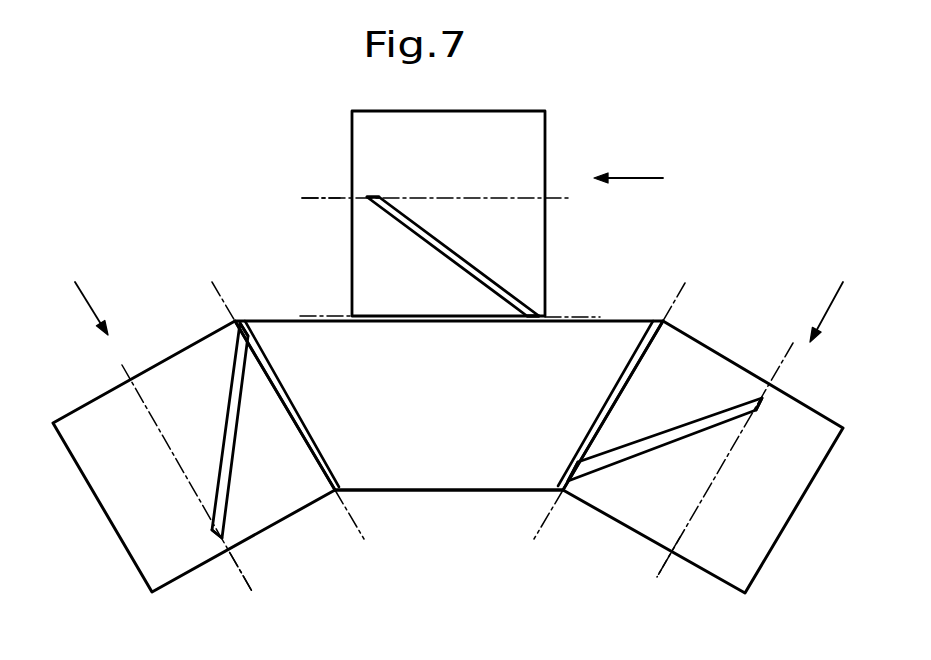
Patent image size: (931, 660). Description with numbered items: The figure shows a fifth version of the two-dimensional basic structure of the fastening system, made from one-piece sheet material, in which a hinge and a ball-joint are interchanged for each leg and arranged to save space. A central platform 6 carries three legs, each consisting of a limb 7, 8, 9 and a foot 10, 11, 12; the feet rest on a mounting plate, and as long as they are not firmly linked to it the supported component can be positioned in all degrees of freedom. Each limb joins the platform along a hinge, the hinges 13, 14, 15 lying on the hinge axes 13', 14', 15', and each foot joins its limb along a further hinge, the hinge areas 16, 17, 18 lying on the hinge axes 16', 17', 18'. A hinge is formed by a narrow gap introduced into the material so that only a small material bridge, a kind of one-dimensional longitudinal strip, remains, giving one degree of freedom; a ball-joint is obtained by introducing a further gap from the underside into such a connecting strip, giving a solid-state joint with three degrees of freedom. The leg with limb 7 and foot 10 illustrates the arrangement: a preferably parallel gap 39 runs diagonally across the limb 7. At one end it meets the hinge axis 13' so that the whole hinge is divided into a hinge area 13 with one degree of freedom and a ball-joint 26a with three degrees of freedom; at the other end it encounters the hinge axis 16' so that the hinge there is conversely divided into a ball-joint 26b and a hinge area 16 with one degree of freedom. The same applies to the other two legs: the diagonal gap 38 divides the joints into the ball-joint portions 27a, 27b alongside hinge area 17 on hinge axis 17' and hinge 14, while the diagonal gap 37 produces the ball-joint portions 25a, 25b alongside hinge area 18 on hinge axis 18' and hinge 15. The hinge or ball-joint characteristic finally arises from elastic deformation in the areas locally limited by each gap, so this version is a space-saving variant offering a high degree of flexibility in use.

The bottom edge of central wall 6 is at (447, 476).
The limb 7 is at (835, 296).
The limb 8 is at (642, 182).
The limb 9 is at (83, 292).
The foot 10 is at (767, 548).
The foot 11 is at (545, 147).
The foot 12 is at (130, 535).
The hinge area 13 is at (600, 405).
The hinge axis 13' is at (581, 443).
The hinge 14 is at (449, 405).
The top hinge axis 14' is at (472, 293).
The hinge 15 is at (297, 405).
The left hinge axis 15' is at (316, 442).
The hinge area 16 is at (725, 460).
The hinge axis 16' is at (683, 589).
The hinge area 17 is at (437, 165).
The hinge axis 17' is at (306, 228).
The hinge area 18 is at (187, 479).
The hinge axis 18' is at (225, 595).
The upper end of brace 37 25a is at (197, 345).
The lower end of brace 37 25b is at (227, 538).
The ball-joint 26a is at (570, 488).
The ball-joint 26b is at (753, 373).
The upper end of brace 38 27a is at (357, 197).
The lower end of brace 38 27b is at (535, 315).
The diagonal gap 37 is at (229, 480).
The diagonal gap 38 is at (423, 240).
The gap 39 is at (652, 446).